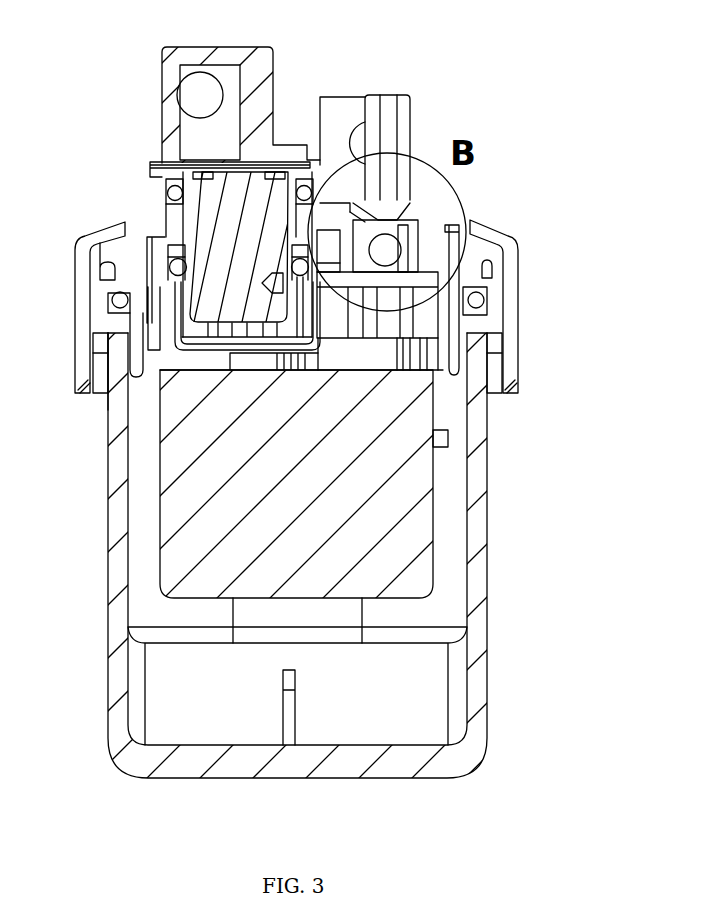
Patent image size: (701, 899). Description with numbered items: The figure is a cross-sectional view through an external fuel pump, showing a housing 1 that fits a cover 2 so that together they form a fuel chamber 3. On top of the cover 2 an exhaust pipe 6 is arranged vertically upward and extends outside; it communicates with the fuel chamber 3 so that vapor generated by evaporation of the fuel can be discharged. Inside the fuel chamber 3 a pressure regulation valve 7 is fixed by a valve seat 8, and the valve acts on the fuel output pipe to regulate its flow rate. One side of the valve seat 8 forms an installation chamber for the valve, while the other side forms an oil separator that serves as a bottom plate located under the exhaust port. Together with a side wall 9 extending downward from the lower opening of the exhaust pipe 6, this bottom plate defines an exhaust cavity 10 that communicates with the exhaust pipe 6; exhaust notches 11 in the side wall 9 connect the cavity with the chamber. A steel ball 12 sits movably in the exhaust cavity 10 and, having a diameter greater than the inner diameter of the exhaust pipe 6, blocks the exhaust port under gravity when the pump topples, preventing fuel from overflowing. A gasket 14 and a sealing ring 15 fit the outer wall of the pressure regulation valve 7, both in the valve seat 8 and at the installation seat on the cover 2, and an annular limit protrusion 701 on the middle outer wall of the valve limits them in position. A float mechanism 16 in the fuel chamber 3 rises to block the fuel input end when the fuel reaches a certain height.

The housing 1 is at (473, 527).
The cover 2 is at (467, 350).
The fuel chamber 3 is at (453, 580).
The exhaust pipe 6 is at (385, 127).
The pressure regulation valve 7 is at (178, 187).
The valve seat 8 is at (200, 345).
The side wall 9 is at (440, 240).
The exhaust cavity 10 is at (393, 217).
The exhaust notches 11 is at (405, 235).
The steel ball 12 is at (397, 257).
The gasket 14 is at (173, 227).
The sealing ring 15 is at (170, 207).
The float mechanism 16 is at (417, 477).
The annular limit protrusion 701 is at (160, 240).